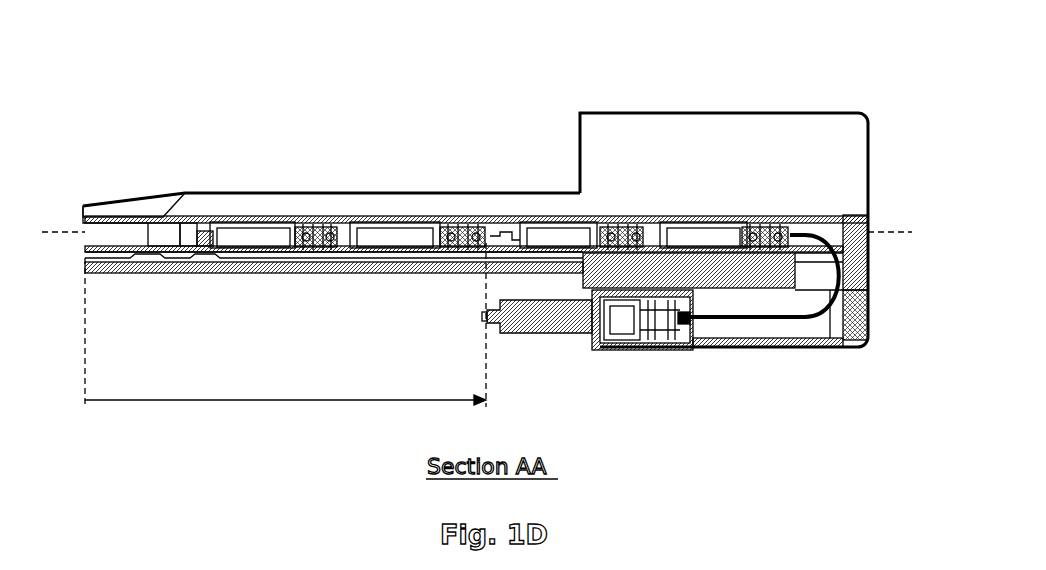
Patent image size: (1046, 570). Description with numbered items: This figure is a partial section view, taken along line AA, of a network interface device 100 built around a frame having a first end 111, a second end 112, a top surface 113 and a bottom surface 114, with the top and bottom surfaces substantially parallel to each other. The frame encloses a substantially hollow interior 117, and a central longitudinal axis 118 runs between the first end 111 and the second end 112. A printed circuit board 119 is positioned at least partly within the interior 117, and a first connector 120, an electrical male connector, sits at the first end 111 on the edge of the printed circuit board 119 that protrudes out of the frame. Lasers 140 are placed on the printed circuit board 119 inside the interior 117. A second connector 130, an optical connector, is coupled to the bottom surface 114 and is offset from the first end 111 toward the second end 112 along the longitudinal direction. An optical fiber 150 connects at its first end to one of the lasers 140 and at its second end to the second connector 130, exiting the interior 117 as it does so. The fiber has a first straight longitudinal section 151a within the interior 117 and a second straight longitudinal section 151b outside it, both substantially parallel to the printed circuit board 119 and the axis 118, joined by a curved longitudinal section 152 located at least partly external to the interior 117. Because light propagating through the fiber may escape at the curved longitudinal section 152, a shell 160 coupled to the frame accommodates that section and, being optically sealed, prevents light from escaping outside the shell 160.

The network interface device 100 is at (64, 50).
The first end 111 is at (83, 206).
The second end 112 is at (868, 188).
The top surface 113 is at (308, 191).
The bottom surface 114 is at (295, 271).
The interior 117 is at (498, 233).
The central longitudinal axis 118 is at (56, 232).
The printed circuit board 119 is at (193, 253).
The first connector 120 is at (118, 248).
The second connector 130 is at (525, 322).
The lasers 140 is at (467, 232).
The optical fiber 150 is at (803, 335).
The first straight longitudinal section 151a is at (793, 237).
The second straight longitudinal section 151b is at (747, 355).
The curved longitudinal section 152 is at (833, 302).
The shell 160 is at (663, 343).